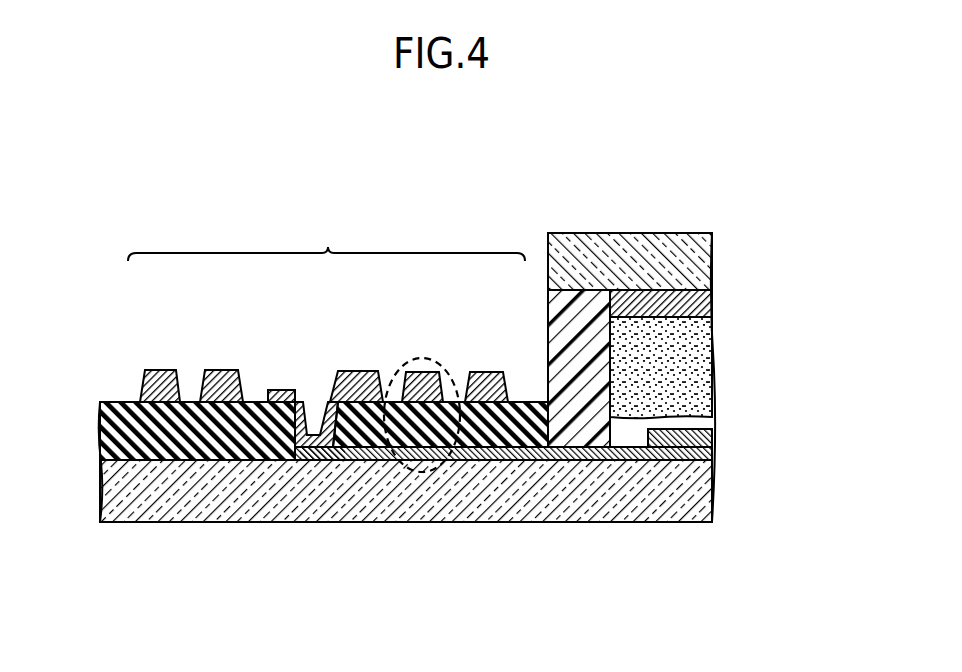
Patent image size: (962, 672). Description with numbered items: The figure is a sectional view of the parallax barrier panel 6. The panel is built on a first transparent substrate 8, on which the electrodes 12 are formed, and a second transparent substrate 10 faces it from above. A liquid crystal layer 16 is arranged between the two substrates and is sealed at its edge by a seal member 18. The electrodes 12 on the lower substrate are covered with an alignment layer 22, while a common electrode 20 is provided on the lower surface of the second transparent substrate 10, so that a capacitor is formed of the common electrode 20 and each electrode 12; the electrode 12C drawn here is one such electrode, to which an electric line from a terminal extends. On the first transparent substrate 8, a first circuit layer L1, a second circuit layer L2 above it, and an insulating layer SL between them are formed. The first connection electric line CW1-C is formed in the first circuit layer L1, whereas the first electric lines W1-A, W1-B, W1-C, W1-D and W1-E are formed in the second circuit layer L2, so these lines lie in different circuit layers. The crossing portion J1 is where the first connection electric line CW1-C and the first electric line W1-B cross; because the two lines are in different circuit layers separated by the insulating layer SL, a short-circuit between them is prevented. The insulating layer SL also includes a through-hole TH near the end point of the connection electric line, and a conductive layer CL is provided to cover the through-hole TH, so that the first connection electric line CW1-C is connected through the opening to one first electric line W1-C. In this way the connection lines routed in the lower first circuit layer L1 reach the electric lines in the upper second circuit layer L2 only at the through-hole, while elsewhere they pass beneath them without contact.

The parallax barrier panel 6 is at (418, 228).
The first transparent substrate 8 is at (707, 497).
The second transparent substrate 10 is at (707, 263).
The electrodes 12 is at (575, 443).
The electrode 12C is at (707, 455).
The liquid crystal layer 16 is at (707, 362).
The seal member 18 is at (583, 433).
The common electrode 20 is at (710, 308).
The alignment layer 22 is at (707, 422).
The insulating layer SL is at (110, 436).
The conductive layer CL is at (328, 398).
The through-hole TH is at (305, 386).
The first electric line W1-A is at (490, 378).
The first electric line W1-B is at (418, 382).
The first electric line W1-C is at (357, 380).
The first electric line W1-D is at (222, 370).
The first electric line W1-E is at (156, 370).
The first circuit layer L1 is at (325, 523).
The first connection electric line CW1-C is at (320, 455).
The second circuit layer L2 is at (326, 240).
The crossing portion J1 is at (403, 471).